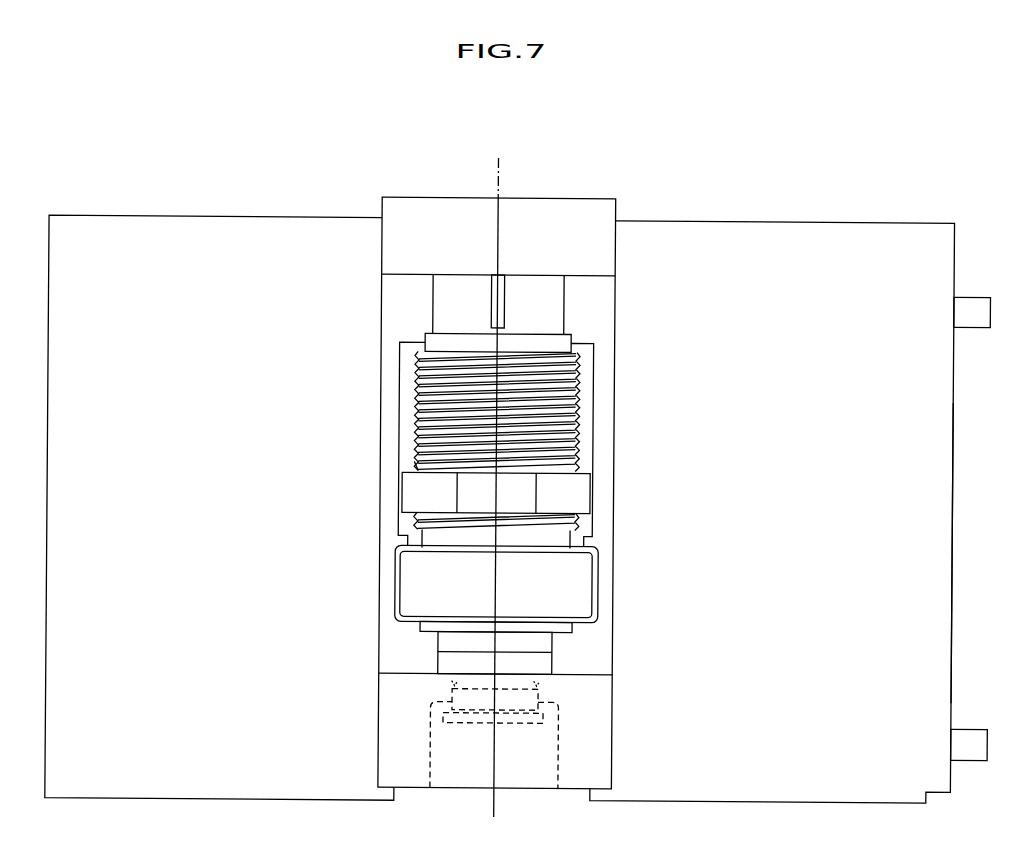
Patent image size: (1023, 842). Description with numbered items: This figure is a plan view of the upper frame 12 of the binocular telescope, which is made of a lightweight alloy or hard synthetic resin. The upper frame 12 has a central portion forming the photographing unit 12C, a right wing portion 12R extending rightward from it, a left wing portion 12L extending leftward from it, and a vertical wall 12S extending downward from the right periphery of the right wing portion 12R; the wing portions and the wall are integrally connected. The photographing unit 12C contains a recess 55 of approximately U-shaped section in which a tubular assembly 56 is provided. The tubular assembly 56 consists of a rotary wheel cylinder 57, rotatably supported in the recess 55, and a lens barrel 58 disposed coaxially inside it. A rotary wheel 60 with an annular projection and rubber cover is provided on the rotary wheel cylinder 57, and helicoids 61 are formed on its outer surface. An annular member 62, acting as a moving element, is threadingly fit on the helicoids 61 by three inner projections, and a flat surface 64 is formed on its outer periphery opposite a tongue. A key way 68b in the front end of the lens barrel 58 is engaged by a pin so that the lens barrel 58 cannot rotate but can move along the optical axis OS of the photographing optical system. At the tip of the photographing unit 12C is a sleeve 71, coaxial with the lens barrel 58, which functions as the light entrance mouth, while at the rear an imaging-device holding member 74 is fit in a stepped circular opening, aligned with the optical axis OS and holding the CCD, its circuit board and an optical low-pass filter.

The upper frame 12 is at (532, 459).
The photographing unit 12C is at (545, 195).
The left wing portion 12L is at (210, 479).
The right wing portion 12R is at (800, 478).
The vertical wall 12S is at (946, 512).
The optical axis OS is at (496, 158).
The sleeve 71 is at (591, 214).
The key way 68b is at (503, 290).
The helicoids 61 is at (582, 381).
The recess 55 is at (592, 419).
The annular member 62 is at (405, 462).
The flat surface 64 is at (517, 492).
The tubular assembly 56 is at (584, 521).
The rotary wheel cylinder 57 is at (430, 544).
The rotary wheel 60 is at (600, 582).
The lens barrel 58 is at (541, 643).
The imaging-device holding member 74 is at (452, 772).